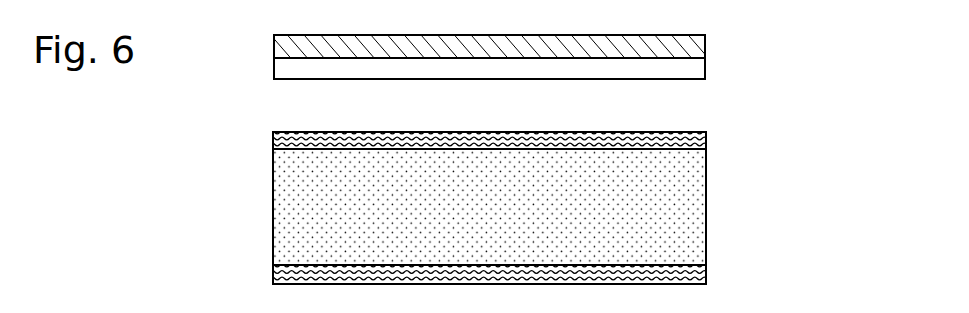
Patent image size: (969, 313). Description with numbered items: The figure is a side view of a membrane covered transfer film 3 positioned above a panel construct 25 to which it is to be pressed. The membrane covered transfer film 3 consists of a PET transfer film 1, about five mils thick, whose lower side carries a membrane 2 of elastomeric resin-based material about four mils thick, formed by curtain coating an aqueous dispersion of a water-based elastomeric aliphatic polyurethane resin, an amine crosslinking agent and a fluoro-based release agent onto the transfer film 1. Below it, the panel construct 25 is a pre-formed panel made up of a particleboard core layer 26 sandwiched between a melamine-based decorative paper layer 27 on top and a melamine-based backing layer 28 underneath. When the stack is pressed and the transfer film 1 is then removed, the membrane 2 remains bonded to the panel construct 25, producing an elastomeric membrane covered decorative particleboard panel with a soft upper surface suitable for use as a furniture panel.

The PET transfer film 1 is at (705, 43).
The membrane 2 is at (705, 67).
The membrane covered transfer film 3 is at (260, 37).
The panel construct 25 is at (263, 132).
The particleboard core layer 26 is at (706, 207).
The melamine-based decorative paper layer 27 is at (706, 140).
The melamine-based backing layer 28 is at (706, 271).